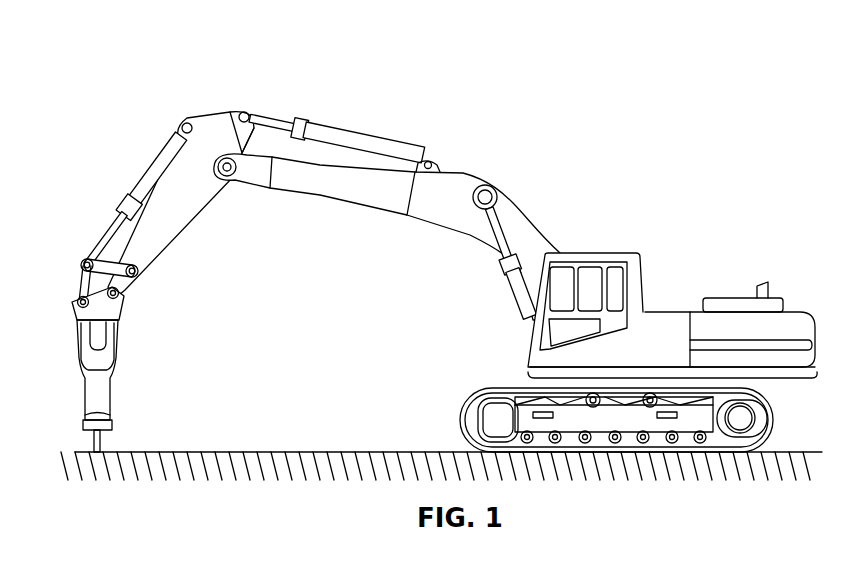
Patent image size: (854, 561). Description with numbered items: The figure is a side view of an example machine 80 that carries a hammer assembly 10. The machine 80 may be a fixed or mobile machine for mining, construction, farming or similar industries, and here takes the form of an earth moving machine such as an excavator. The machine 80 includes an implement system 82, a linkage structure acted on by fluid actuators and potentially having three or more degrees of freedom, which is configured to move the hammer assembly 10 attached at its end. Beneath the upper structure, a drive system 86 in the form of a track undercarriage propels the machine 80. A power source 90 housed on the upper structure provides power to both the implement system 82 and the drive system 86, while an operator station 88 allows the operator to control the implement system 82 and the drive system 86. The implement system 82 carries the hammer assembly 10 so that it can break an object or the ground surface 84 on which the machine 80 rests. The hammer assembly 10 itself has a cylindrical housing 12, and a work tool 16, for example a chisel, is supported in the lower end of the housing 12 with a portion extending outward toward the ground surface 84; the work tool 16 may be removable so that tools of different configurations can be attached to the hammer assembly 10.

The hammer assembly 10 is at (72, 353).
The housing 12 is at (112, 375).
The work tool 16 is at (100, 443).
The machine 80 is at (702, 213).
The implement system 82 is at (75, 82).
The ground surface 84 is at (290, 452).
The drive system 86 is at (462, 423).
The operator station 88 is at (585, 285).
The power source 90 is at (738, 293).